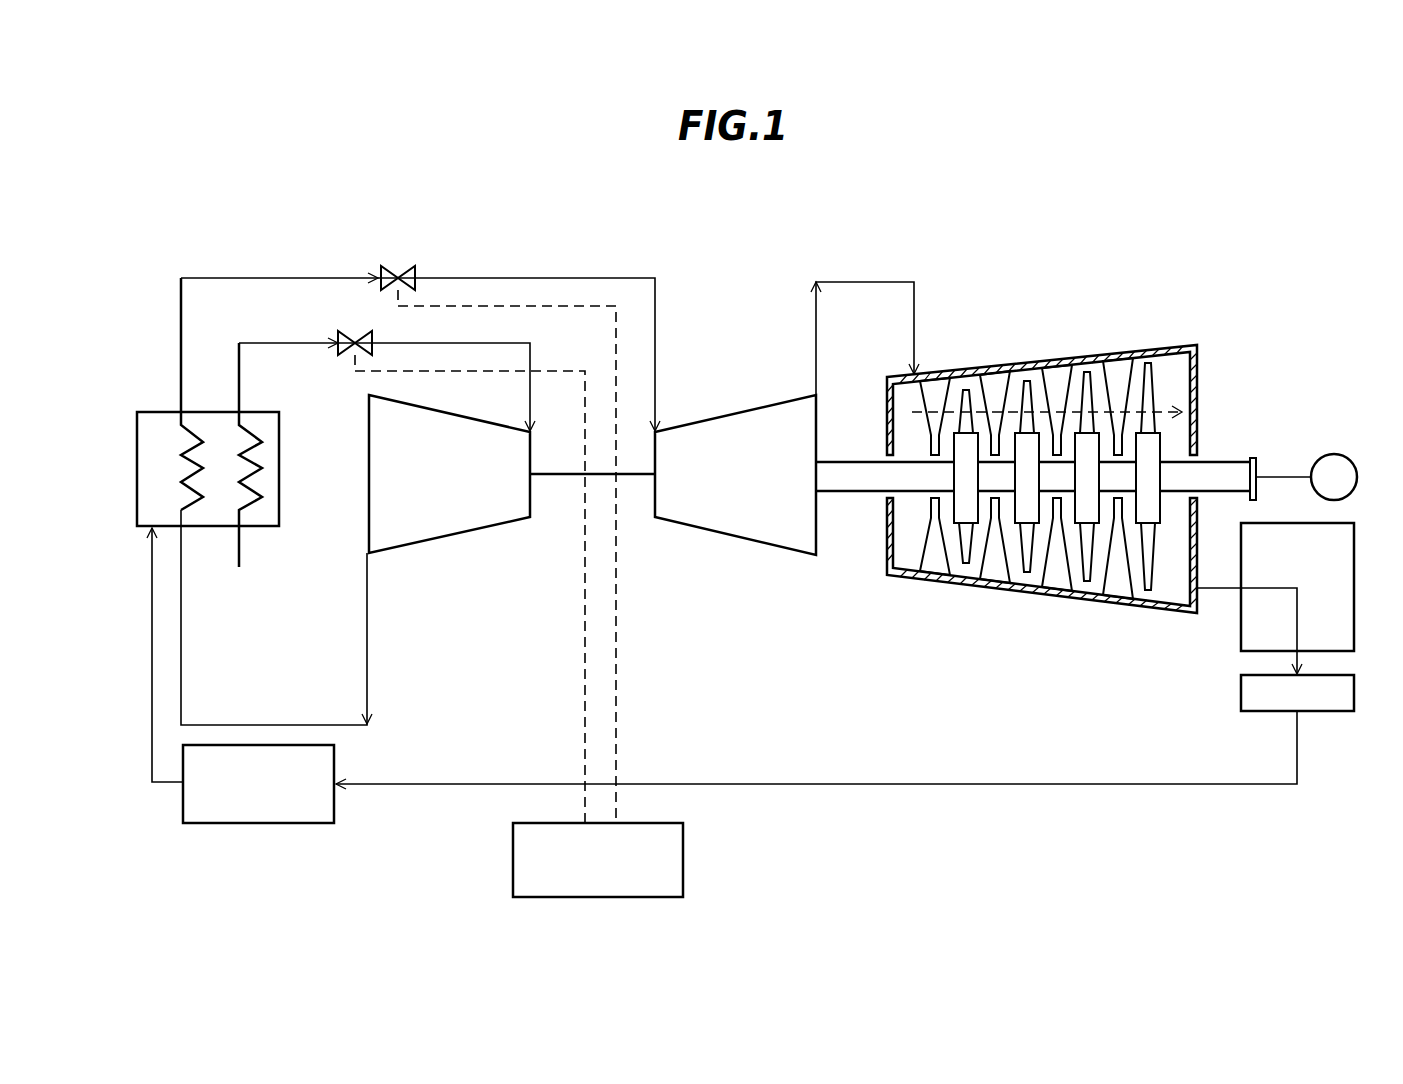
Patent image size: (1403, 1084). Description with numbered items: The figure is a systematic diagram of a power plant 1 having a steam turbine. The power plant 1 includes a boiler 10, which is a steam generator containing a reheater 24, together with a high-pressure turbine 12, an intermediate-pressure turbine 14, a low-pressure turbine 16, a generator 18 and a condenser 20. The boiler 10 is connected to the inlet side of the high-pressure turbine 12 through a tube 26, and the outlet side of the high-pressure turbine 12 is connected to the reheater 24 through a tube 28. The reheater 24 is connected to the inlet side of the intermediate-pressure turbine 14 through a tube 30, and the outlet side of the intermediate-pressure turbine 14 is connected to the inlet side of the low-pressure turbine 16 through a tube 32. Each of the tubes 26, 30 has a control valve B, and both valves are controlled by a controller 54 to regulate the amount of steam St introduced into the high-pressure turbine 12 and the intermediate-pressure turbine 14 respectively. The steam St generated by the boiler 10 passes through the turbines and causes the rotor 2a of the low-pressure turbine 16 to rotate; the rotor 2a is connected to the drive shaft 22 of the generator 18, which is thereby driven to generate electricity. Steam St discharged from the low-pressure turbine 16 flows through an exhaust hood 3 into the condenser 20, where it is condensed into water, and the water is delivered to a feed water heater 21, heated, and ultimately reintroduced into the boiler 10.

The power plant 1 is at (1197, 291).
The rotor 2a is at (1226, 461).
The exhaust hood 3 is at (1354, 573).
The boiler 10 is at (279, 462).
The high-pressure turbine 12 is at (447, 537).
The intermediate-pressure turbine 14 is at (725, 538).
The low-pressure turbine 16 is at (1113, 345).
The generator 18 is at (1333, 453).
The condenser 20 is at (1354, 694).
The feed water heater 21 is at (263, 825).
The drive shaft 22 is at (1285, 476).
The reheater 24 is at (180, 440).
The tube 26 is at (268, 341).
The tube 28 is at (259, 723).
The tube 30 is at (228, 276).
The tube 32 is at (916, 291).
The controller 54 is at (683, 858).
The control valve B is at (396, 268).
The steam St is at (1040, 410).